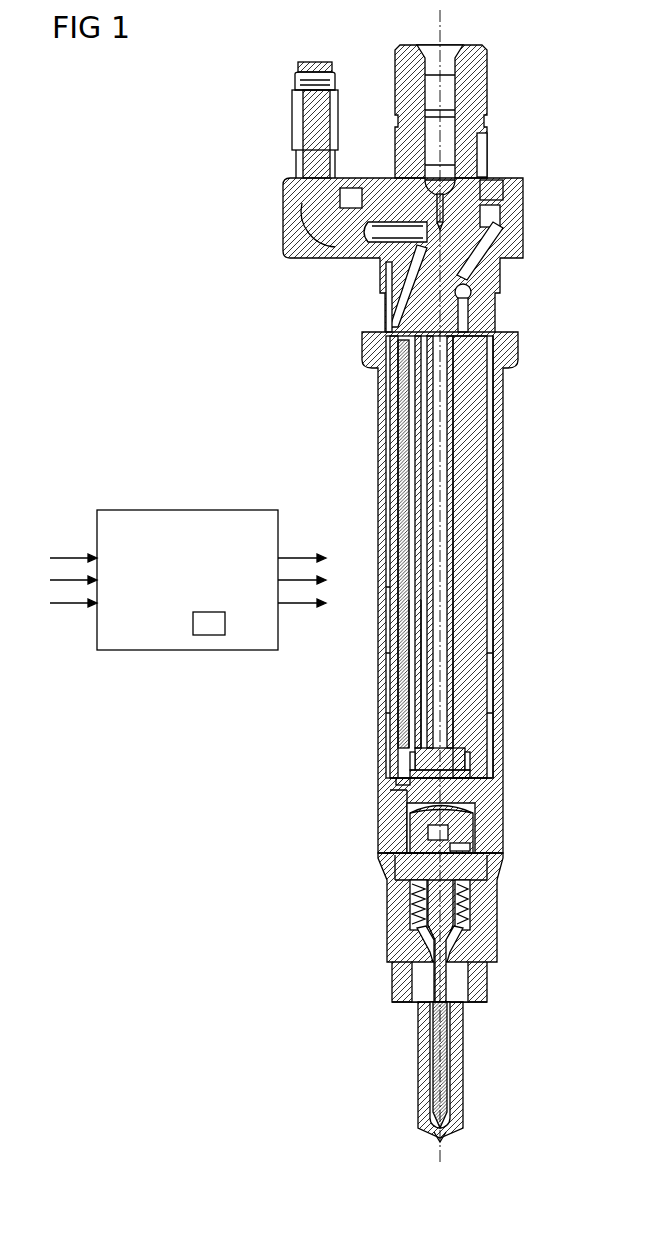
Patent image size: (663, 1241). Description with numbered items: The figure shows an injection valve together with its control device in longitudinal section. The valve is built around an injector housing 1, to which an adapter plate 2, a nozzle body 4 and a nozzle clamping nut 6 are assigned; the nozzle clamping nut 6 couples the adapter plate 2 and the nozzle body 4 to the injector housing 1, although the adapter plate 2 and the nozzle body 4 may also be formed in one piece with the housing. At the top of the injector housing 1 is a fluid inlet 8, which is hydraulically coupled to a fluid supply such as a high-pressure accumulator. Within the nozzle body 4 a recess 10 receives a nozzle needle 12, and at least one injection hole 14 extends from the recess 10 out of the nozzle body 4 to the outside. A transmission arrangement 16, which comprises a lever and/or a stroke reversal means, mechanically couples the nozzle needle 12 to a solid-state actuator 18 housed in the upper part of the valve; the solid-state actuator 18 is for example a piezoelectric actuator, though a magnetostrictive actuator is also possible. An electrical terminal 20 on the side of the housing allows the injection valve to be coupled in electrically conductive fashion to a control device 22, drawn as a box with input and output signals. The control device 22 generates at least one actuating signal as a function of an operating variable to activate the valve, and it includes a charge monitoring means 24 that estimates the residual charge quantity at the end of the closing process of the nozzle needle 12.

The injector housing 1 is at (503, 627).
The adapter plate 2 is at (484, 870).
The nozzle body 4 is at (497, 955).
The nozzle clamping nut 6 is at (488, 990).
The fluid inlet 8 is at (445, 24).
The recess 10 is at (412, 938).
The nozzle needle 12 is at (418, 1036).
The injection hole 14 is at (432, 1134).
The transmission arrangement 16 is at (513, 821).
The solid-state actuator 18 is at (492, 571).
The electrical terminal 20 is at (292, 247).
The control device 22 is at (187, 522).
The charge monitoring means 24 is at (208, 620).